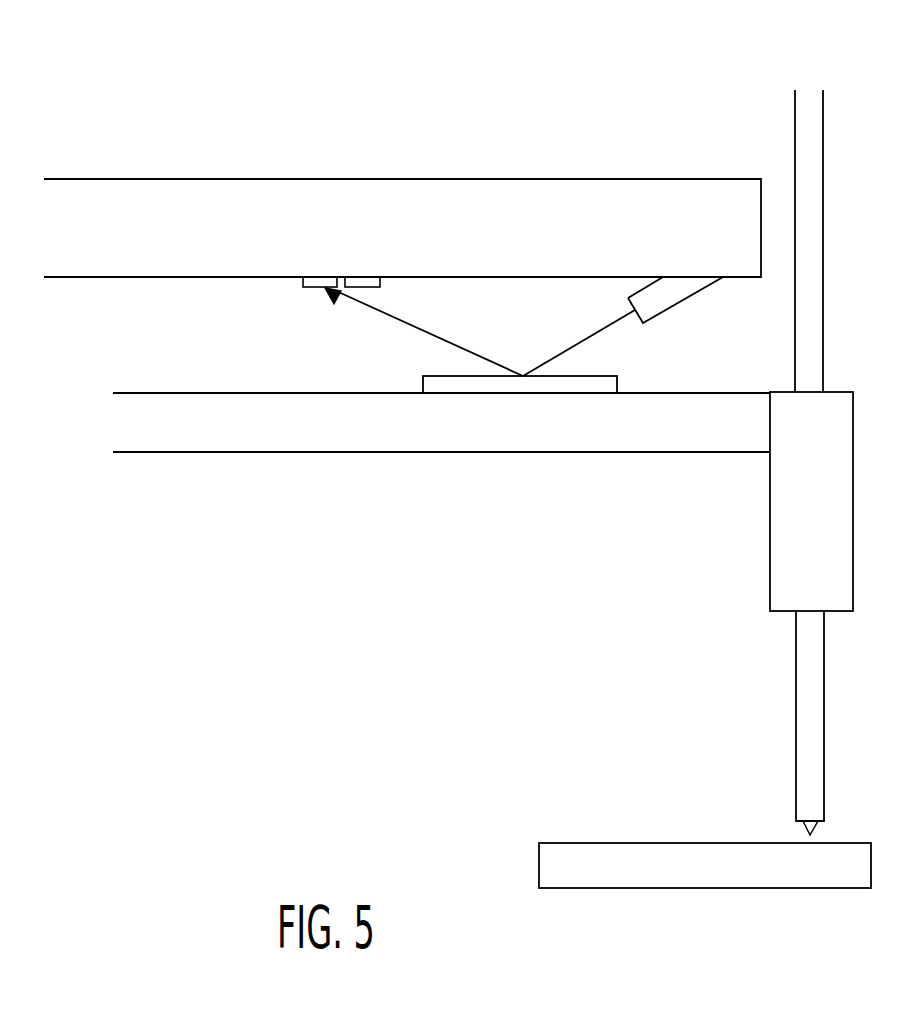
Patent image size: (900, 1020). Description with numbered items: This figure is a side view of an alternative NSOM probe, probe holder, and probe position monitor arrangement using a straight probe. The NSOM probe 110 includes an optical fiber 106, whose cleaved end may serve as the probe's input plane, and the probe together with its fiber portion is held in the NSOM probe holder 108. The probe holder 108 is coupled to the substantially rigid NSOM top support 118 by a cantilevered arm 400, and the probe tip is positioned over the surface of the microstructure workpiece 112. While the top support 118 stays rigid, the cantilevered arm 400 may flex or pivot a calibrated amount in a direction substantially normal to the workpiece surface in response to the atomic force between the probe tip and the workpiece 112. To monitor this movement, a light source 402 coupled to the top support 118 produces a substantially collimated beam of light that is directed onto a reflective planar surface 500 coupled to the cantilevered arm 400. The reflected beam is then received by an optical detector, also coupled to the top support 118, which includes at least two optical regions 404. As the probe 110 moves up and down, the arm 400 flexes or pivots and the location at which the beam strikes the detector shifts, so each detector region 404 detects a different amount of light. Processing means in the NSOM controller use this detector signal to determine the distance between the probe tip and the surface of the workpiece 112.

The optical fiber 106 is at (795, 316).
The NSOM probe holder 108 is at (790, 533).
The NSOM probe 110 is at (805, 741).
The microstructure workpiece 112 is at (548, 853).
The NSOM top support 118 is at (523, 203).
The cantilevered arm 400 is at (317, 452).
The light source 402 is at (684, 288).
The optical regions 404 is at (367, 283).
The reflective planar surface 500 is at (545, 383).